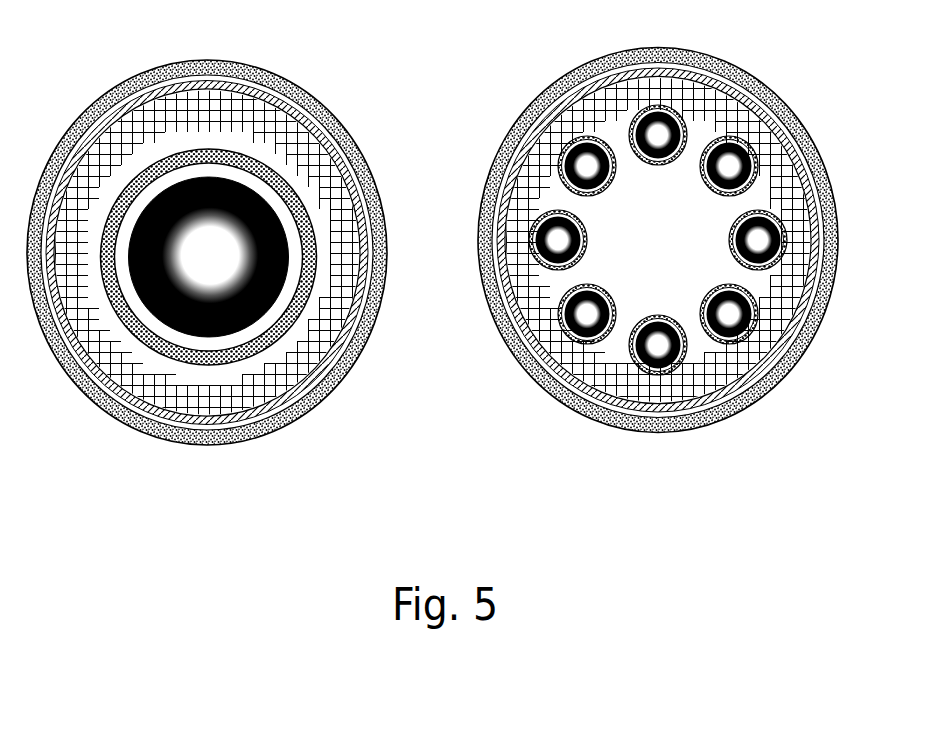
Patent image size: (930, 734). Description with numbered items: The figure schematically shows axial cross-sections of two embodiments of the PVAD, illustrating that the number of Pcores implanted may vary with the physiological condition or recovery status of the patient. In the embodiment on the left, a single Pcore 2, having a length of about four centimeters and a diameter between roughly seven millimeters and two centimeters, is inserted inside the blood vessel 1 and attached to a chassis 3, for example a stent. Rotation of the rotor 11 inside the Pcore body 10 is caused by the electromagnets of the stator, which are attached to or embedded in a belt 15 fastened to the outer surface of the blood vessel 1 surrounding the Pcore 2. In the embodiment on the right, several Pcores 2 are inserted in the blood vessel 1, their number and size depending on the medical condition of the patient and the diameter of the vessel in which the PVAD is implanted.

The blood vessel 1 is at (478, 255).
The Pcore 2 is at (175, 147).
The chassis 3 is at (483, 187).
The Pcore body 10 is at (245, 155).
The rotor 11 is at (192, 230).
The belt 15 is at (510, 127).